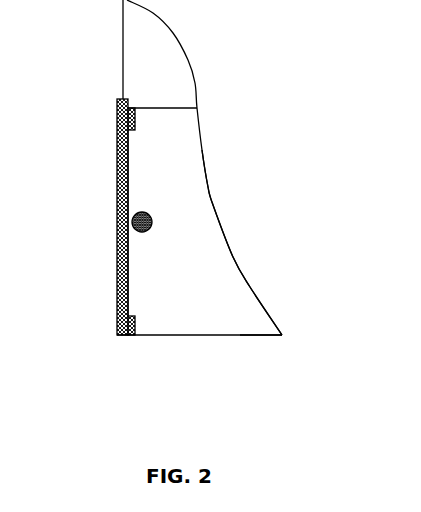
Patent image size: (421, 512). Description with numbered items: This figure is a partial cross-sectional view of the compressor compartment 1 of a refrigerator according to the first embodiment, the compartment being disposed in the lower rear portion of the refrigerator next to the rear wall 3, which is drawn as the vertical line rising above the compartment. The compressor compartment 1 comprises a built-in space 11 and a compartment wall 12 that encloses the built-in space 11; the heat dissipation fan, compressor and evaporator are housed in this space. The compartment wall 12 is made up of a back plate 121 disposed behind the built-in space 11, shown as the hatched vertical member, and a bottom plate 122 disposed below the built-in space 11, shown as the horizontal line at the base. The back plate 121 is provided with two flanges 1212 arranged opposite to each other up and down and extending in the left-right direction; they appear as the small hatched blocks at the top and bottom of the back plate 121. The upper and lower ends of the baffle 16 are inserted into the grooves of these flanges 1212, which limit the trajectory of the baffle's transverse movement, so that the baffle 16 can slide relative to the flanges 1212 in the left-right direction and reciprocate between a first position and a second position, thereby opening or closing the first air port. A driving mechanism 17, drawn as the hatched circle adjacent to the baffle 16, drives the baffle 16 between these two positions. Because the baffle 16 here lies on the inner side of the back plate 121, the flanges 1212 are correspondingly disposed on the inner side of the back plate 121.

The compressor compartment 1 is at (227, 318).
The rear wall 3 is at (122, 50).
The built-in space 11 is at (222, 278).
The compartment wall 12 is at (155, 338).
The back plate 121 is at (119, 290).
The bottom plate 122 is at (238, 338).
The flange 1212 is at (126, 98).
The baffle 16 is at (131, 158).
The driving mechanism 17 is at (150, 212).